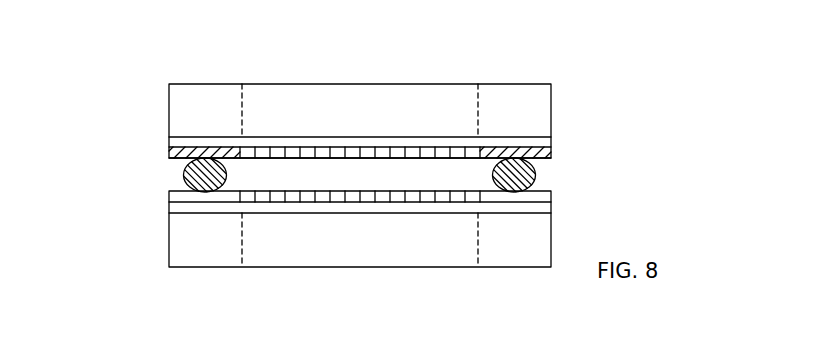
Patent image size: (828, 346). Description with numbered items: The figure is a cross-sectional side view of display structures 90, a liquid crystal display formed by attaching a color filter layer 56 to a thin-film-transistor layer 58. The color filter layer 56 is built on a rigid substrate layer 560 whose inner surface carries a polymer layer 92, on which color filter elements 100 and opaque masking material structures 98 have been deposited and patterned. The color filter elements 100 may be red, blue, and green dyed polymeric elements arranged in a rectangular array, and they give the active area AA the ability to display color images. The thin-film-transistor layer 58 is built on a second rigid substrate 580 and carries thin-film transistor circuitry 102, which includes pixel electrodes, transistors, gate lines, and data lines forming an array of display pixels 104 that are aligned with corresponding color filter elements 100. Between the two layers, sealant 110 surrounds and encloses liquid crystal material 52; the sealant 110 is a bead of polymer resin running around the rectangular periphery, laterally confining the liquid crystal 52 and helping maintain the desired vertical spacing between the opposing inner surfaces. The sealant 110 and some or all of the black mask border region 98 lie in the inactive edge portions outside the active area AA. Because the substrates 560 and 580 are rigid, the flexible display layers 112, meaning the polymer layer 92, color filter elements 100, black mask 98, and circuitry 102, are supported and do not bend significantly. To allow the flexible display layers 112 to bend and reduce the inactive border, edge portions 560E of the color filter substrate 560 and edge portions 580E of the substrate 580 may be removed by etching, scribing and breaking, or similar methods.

The display structures 90 is at (112, 82).
The color filter layer 56 is at (560, 87).
The thin-film-transistor layer 58 is at (560, 226).
The polymer layer 92 is at (441, 135).
The substrate layer 560 is at (420, 103).
The edge portions 560E is at (242, 78).
The substrate layer 580 is at (388, 268).
The edge portions 580E is at (242, 268).
The active area AA is at (478, 57).
The opaque masking material structures 98 is at (210, 148).
The color filter elements 100 is at (296, 153).
The sealant 110 is at (185, 176).
The liquid crystal material 52 is at (351, 172).
The flexible display layers 112 is at (556, 137).
The thin-film transistor circuitry 102 is at (163, 197).
The display pixels 104 is at (352, 203).